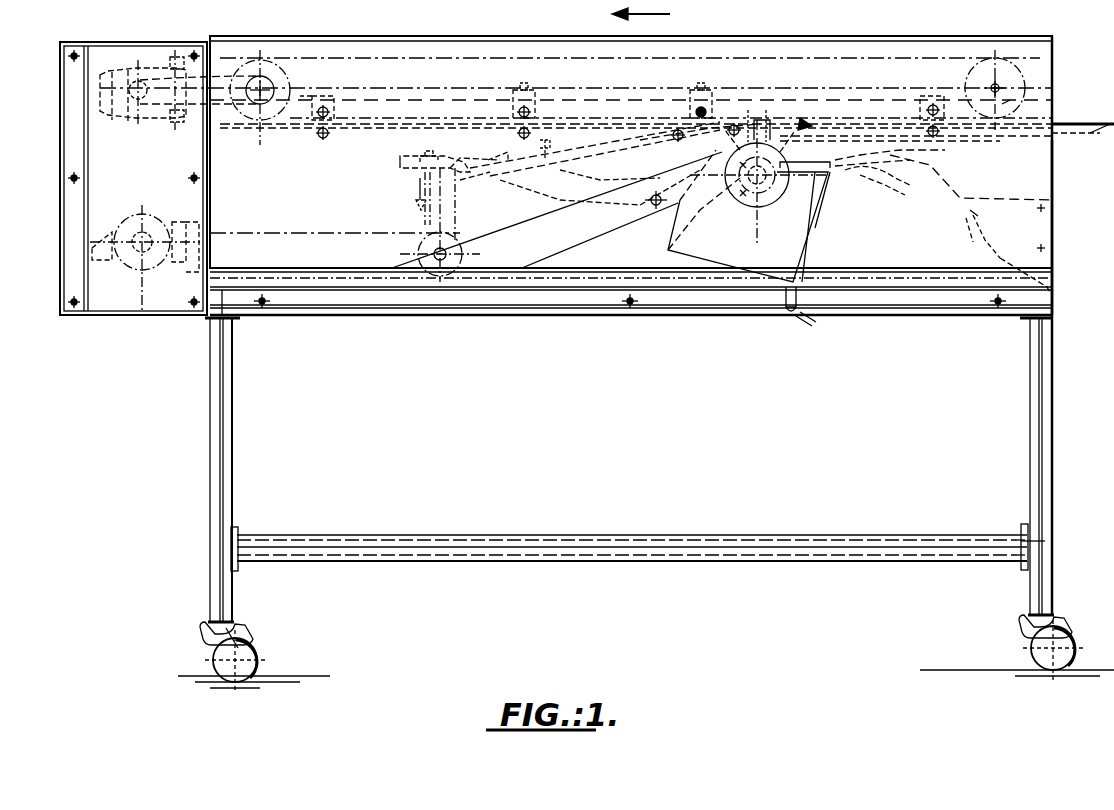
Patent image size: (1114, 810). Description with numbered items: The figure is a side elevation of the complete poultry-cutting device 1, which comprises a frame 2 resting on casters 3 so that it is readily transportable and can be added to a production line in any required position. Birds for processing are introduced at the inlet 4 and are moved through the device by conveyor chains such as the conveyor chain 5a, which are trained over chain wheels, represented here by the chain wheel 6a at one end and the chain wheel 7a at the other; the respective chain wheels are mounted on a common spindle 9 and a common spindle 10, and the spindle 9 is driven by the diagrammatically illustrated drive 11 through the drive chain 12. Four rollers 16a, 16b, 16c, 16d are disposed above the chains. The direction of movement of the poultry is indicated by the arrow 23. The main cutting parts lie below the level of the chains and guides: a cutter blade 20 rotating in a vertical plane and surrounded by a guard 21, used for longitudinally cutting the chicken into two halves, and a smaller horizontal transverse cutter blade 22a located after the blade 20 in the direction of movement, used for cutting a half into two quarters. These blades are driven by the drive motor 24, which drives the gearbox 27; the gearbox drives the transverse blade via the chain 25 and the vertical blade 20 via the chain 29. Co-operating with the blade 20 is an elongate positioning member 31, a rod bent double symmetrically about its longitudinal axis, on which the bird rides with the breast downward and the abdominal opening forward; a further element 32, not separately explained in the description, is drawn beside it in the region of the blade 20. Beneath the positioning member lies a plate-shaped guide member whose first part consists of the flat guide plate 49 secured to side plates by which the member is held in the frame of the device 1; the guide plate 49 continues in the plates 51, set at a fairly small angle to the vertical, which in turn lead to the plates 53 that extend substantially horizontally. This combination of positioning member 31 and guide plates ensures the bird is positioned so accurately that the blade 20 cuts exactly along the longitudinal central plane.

The device 1 is at (1062, 345).
The frame 2 is at (1046, 456).
The casters 3 is at (262, 658).
The inlet 4 is at (1058, 172).
The conveyor chain 5a is at (478, 58).
The chain wheel 6a is at (270, 58).
The chain wheel 7a is at (985, 70).
The spindle 9 is at (256, 108).
The spindle 10 is at (1000, 83).
The drive 11 is at (175, 58).
The drive chain 12 is at (210, 70).
The roller 16a is at (338, 105).
The roller 16b is at (545, 105).
The roller 16c is at (718, 108).
The roller 16d is at (945, 85).
The cutter blade 20 is at (806, 193).
The guard 21 is at (810, 240).
The transverse cutter blade 22a is at (400, 172).
The arrow 23 is at (664, 14).
The drive motor 24 is at (135, 232).
The chain 25 is at (272, 232).
The gearbox 27 is at (450, 200).
The chain 29 is at (560, 252).
The elongate positioning member 31 is at (862, 140).
The lever 32 is at (876, 157).
The guide plate 49 is at (1008, 258).
The plates 51 is at (970, 226).
The plates 53 is at (918, 165).